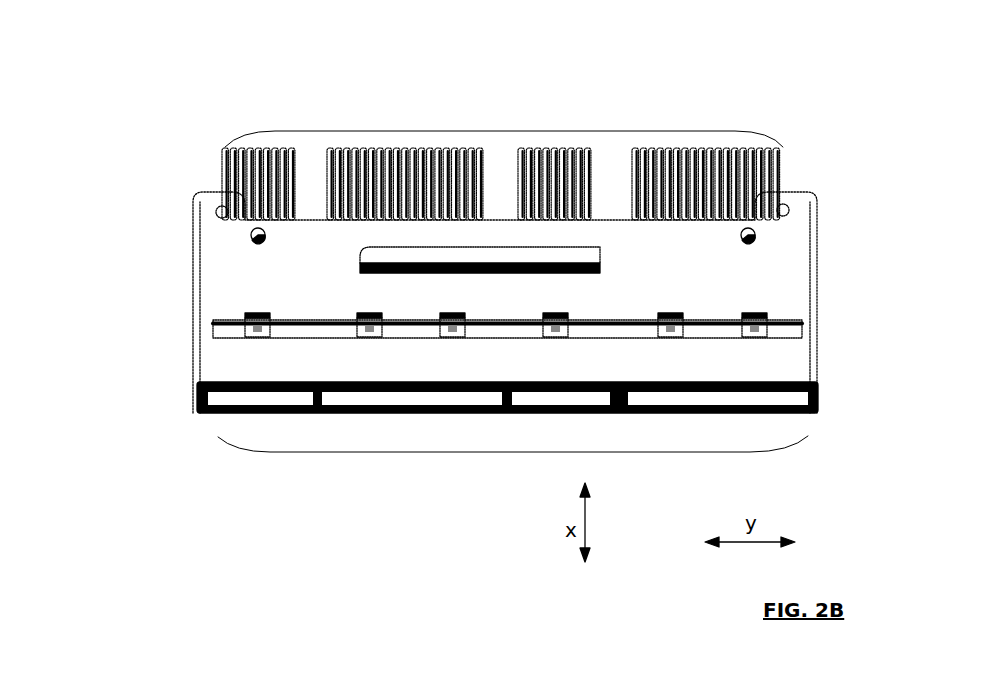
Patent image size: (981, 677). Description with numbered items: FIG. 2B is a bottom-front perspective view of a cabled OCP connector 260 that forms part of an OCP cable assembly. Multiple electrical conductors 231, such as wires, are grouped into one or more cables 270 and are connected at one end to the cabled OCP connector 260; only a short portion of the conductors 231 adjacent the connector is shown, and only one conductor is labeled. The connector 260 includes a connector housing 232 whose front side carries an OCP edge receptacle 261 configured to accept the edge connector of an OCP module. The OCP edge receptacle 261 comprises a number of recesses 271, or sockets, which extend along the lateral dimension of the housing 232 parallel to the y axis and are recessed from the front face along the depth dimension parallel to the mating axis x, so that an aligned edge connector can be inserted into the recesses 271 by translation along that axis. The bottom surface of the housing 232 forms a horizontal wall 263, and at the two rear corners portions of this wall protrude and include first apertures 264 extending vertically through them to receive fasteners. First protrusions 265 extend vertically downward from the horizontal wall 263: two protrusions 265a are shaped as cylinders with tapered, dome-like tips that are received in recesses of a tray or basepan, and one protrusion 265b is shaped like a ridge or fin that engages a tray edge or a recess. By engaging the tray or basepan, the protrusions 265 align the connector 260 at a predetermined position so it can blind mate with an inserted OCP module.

The cabled OCP connector 260 is at (488, 293).
The cable 270 is at (502, 130).
The electrical conductor 231 is at (357, 160).
The connector housing 232 is at (195, 355).
The first aperture 264 is at (216, 208).
The first protrusion 265 is at (514, 351).
The first type of protrusion 265a is at (252, 240).
The second protrusion 265b is at (368, 262).
The horizontal wall 263 is at (785, 305).
The recess 271 is at (635, 398).
The OCP edge receptacle 261 is at (513, 452).